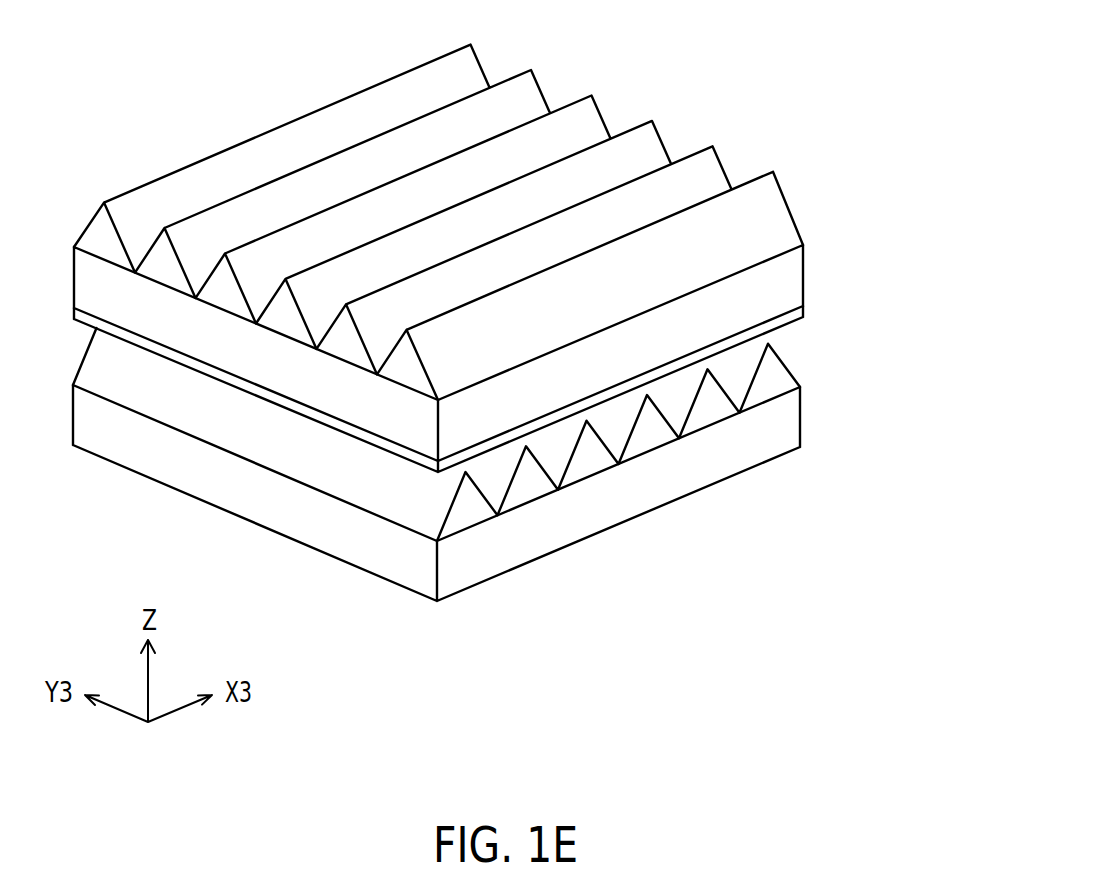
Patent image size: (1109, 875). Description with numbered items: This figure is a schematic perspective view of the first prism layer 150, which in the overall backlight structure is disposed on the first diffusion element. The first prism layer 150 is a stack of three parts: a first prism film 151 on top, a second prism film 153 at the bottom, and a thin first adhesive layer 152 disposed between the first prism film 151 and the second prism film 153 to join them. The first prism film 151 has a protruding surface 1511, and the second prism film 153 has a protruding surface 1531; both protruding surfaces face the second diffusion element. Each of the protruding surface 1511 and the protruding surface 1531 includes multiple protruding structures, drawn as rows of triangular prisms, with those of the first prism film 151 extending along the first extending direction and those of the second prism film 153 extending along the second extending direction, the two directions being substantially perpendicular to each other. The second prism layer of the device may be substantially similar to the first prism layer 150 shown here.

The first prism layer 150 is at (515, 323).
The first prism film 151 is at (513, 253).
The protruding surface 1511 is at (790, 150).
The first adhesive layer 152 is at (793, 318).
The second prism film 153 is at (515, 464).
The protruding surface 1531 is at (801, 351).